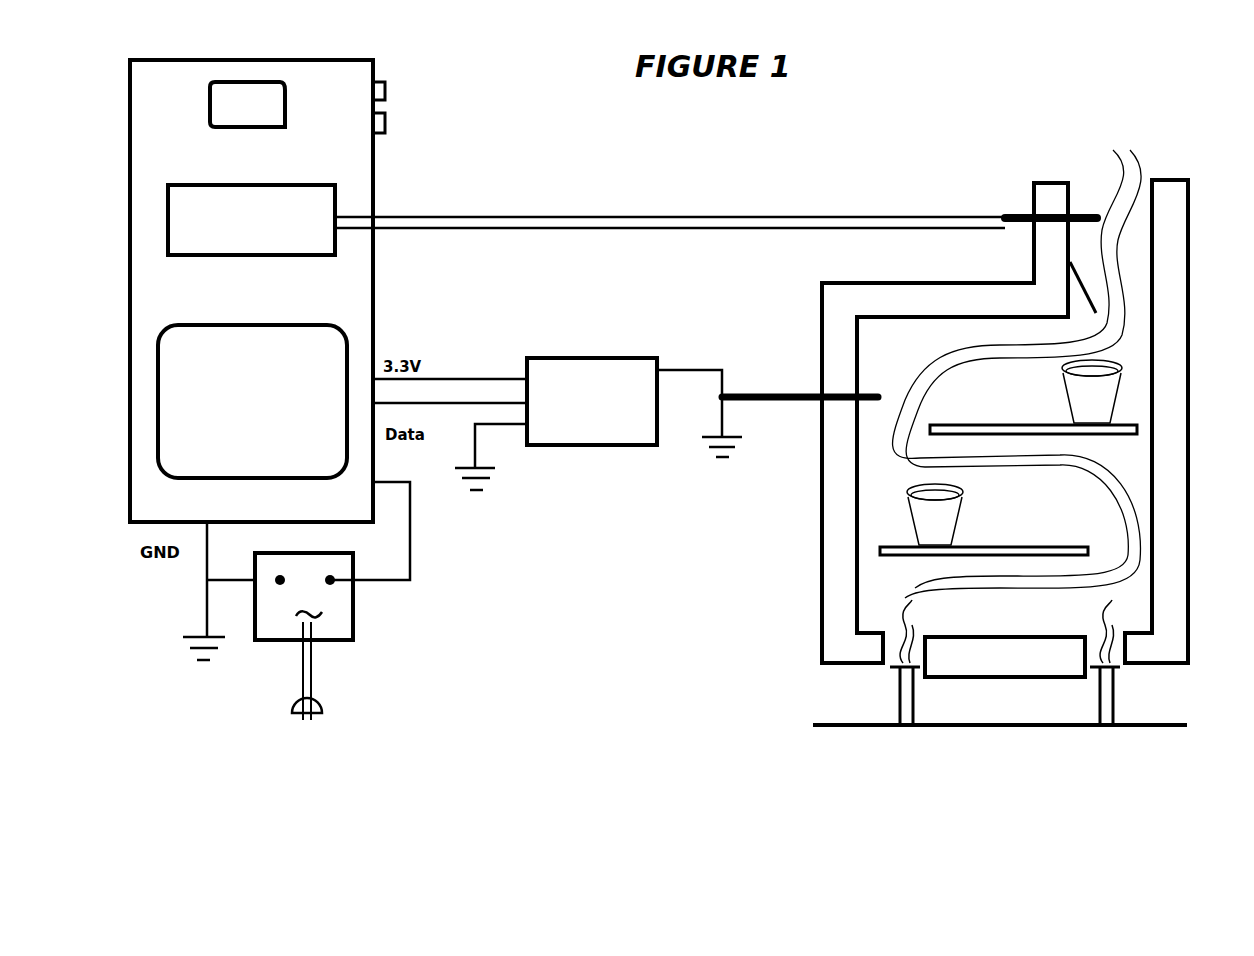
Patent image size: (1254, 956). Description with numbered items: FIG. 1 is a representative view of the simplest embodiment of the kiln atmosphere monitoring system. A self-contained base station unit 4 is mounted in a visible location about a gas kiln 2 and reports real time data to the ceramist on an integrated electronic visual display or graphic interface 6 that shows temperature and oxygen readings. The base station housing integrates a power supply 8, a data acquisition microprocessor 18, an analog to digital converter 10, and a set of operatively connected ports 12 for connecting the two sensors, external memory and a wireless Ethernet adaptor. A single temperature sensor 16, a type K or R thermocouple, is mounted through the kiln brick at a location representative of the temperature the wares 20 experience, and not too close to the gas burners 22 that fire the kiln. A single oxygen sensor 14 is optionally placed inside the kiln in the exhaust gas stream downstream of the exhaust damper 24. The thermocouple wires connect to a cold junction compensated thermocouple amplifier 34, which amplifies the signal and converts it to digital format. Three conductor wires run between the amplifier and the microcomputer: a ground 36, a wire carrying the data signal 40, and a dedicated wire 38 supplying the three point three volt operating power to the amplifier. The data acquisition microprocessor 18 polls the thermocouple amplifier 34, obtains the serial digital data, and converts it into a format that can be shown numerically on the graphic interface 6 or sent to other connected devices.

The kiln 2 is at (822, 528).
The base station unit 4 is at (373, 288).
The graphic interface 6 is at (328, 350).
The power supply 8 is at (343, 620).
The analog to digital converter 10 is at (325, 208).
The ports 12 is at (387, 90).
The oxygen sensor 14 is at (1028, 212).
The temperature sensor 16 is at (778, 387).
The data acquisition microprocessor 18 is at (283, 117).
The wares 20 is at (927, 527).
The gas burners 22 is at (900, 687).
The exhaust damper 24 is at (1087, 276).
The cold junction compensated thermocouple amplifier 34 is at (620, 443).
The ground 36 is at (497, 425).
The power wire 38 is at (453, 379).
The data signal wire 40 is at (497, 400).